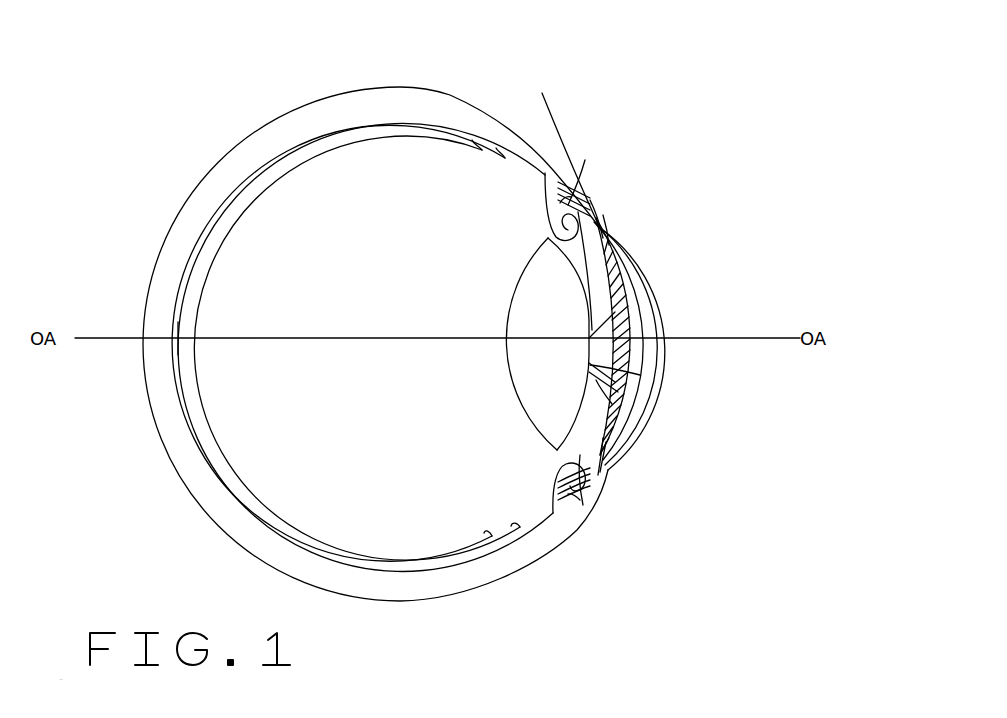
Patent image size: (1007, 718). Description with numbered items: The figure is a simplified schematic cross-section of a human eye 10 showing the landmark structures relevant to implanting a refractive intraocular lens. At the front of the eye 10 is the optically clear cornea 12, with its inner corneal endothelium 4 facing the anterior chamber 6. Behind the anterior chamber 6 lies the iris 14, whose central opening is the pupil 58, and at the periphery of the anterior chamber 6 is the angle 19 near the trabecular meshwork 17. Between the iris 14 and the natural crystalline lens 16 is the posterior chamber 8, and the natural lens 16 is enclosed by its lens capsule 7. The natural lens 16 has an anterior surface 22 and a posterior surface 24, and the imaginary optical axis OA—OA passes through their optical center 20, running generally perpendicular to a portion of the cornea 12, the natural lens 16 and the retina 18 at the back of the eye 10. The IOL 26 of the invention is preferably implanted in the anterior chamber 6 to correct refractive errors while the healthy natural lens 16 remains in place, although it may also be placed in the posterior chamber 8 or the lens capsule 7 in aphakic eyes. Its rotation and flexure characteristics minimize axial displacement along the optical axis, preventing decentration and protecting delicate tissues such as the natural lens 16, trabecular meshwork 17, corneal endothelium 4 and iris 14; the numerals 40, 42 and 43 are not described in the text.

The eye 10 is at (582, 70).
The corneal endothelium 4 is at (610, 243).
The anterior chamber 6 is at (666, 321).
The lens capsule 7 is at (527, 414).
The posterior chamber 8 is at (605, 462).
The cornea 12 is at (657, 297).
The iris 14 is at (588, 219).
The natural crystalline lens 16 is at (550, 422).
The trabecular meshwork 17 is at (590, 200).
The retina 18 is at (224, 476).
The angle 19 is at (610, 223).
The optical center 20 is at (598, 268).
The anterior surface 22 is at (640, 375).
The posterior surface 24 is at (517, 388).
The IOL 26 is at (632, 356).
The zonule 40 is at (603, 215).
The ciliary process 42 is at (580, 197).
The ciliary muscle 43 is at (560, 203).
The pupil 58 is at (612, 404).